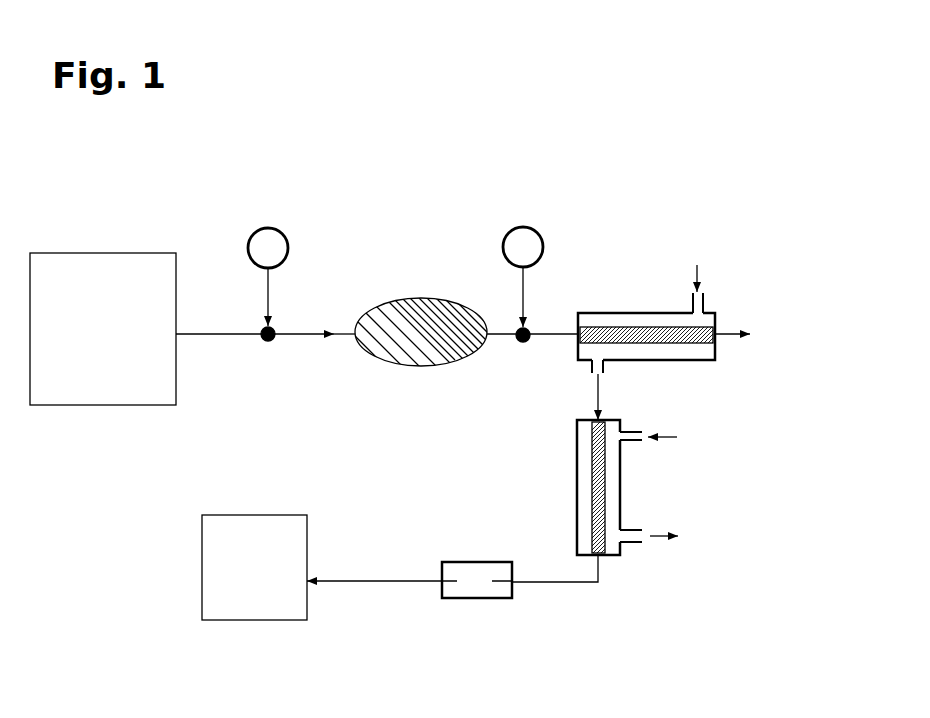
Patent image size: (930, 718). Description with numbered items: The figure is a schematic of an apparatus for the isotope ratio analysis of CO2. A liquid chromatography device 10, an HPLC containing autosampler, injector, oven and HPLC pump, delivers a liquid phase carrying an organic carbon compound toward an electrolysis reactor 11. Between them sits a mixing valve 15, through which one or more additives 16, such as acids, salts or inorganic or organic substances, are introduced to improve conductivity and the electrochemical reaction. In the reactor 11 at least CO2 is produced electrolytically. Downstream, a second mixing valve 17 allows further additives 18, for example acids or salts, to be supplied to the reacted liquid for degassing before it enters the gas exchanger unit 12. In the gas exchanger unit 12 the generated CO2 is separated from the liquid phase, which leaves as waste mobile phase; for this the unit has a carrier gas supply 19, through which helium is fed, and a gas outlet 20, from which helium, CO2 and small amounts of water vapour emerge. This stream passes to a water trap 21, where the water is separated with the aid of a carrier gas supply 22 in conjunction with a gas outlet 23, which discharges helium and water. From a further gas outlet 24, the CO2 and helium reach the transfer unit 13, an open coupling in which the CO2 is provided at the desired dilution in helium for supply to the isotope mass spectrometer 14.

The liquid chromatography device 10 is at (100, 253).
The electrolysis reactor 11 is at (420, 322).
The gas exchanger unit 12 is at (648, 312).
The transfer unit 13 is at (477, 598).
The isotope mass spectrometer 14 is at (251, 620).
The mixing valve 15 is at (271, 342).
The additives 16 is at (262, 228).
The mixing valve 17 is at (521, 343).
The additives 18 is at (530, 226).
The carrier gas supply 19 is at (708, 290).
The gas outlet 20 is at (600, 366).
The water trap 21 is at (620, 488).
The carrier gas supply 22 is at (642, 440).
The gas outlet 23 is at (642, 542).
The further gas outlet 24 is at (600, 560).